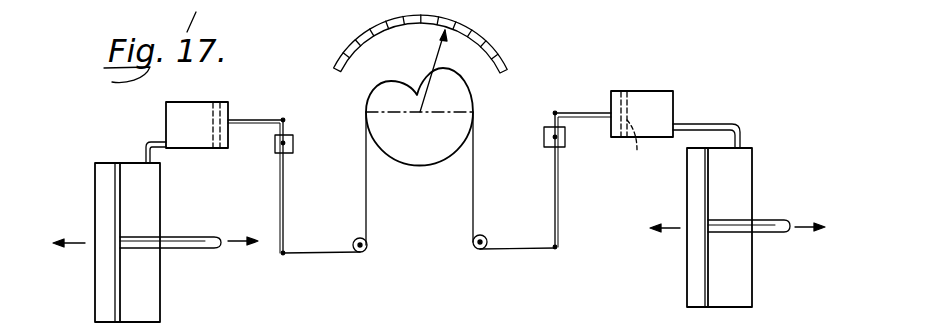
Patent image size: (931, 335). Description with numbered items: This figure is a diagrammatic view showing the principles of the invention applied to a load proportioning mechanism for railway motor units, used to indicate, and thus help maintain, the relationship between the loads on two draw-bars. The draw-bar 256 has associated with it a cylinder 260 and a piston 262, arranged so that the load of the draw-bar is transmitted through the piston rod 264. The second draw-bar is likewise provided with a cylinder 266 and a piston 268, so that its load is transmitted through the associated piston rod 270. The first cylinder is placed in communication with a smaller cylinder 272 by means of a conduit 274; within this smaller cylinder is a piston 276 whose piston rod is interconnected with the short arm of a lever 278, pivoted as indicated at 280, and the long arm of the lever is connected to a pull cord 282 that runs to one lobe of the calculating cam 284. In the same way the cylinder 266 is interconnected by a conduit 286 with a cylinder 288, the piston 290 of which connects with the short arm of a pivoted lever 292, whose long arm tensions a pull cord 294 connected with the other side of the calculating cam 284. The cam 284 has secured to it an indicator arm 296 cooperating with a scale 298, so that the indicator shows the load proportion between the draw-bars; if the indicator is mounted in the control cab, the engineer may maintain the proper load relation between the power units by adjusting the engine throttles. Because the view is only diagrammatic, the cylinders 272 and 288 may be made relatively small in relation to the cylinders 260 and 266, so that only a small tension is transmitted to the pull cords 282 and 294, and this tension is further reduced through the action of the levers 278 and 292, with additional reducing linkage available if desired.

The draw-bar 256 is at (432, 208).
The cylinder 260 is at (94, 286).
The piston 262 is at (121, 305).
The piston rod 264 is at (201, 236).
The cylinder 266 is at (687, 272).
The piston 268 is at (709, 292).
The piston rod 270 is at (776, 220).
The cylinder 272 is at (166, 108).
The conduit 274 is at (147, 141).
The piston 276 is at (223, 110).
The lever 278 is at (284, 188).
The pivot 280 is at (277, 143).
The pull cord 282 is at (326, 256).
The calculating cam 284 is at (421, 150).
The conduit 286 is at (710, 124).
The cylinder 288 is at (655, 91).
The piston 290 is at (645, 147).
The lever 292 is at (556, 178).
The pull cord 294 is at (524, 249).
The indicator arm 296 is at (434, 58).
The scale 298 is at (363, 32).